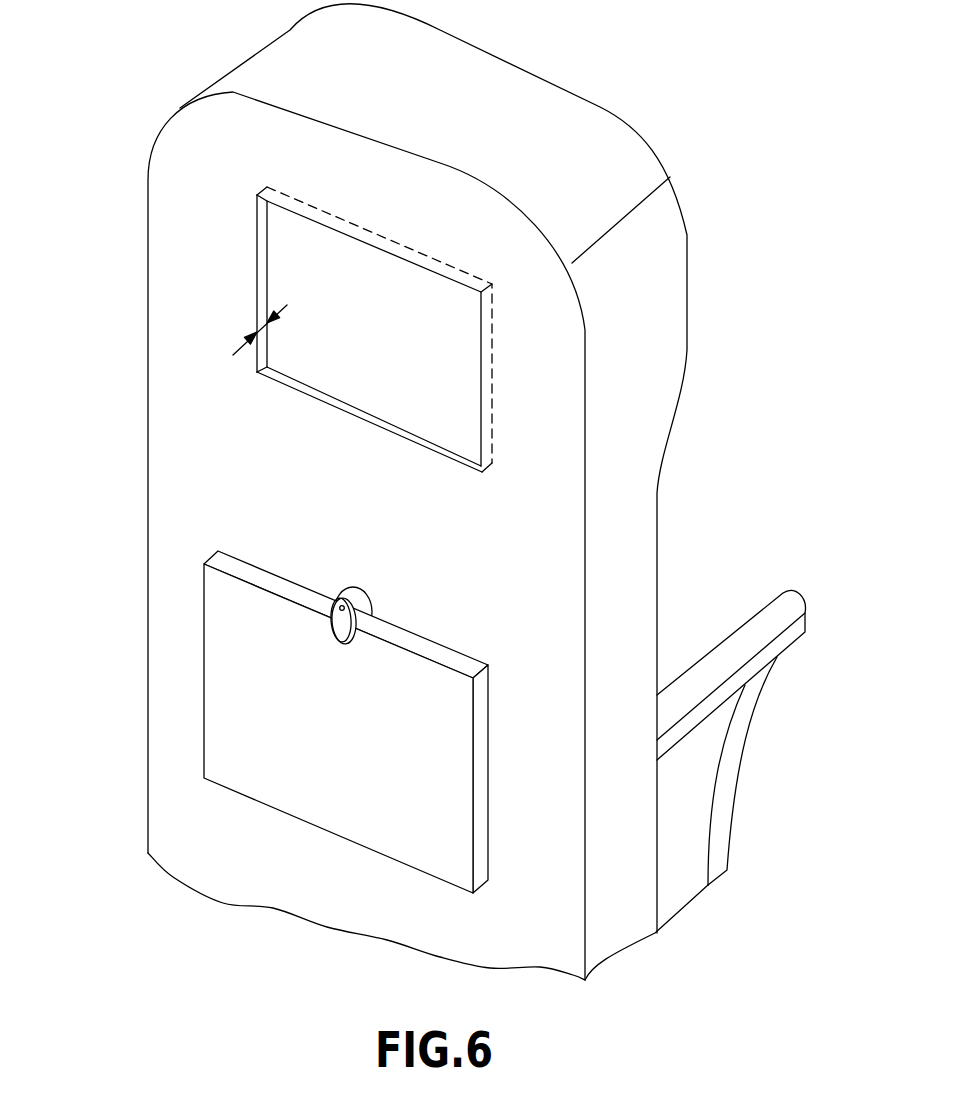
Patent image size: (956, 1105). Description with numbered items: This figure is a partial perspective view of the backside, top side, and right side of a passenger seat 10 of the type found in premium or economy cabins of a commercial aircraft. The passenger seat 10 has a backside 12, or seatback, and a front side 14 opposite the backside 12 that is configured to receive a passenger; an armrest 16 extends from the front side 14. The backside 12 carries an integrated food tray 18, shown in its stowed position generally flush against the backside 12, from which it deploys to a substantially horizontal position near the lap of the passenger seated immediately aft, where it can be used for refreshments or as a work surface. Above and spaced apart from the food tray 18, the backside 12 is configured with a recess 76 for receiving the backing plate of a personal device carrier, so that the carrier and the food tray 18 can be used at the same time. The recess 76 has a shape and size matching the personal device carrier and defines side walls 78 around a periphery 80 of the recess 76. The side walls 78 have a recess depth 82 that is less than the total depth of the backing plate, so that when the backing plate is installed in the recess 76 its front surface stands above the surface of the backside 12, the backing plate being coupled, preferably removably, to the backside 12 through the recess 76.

The passenger seat 10 is at (432, 492).
The backside 12 is at (205, 128).
The front side 14 is at (687, 238).
The armrest 16 is at (768, 620).
The food tray 18 is at (237, 705).
The recess 76 is at (341, 323).
The side walls 78 is at (262, 257).
The periphery 80 is at (353, 410).
The recess depth 82 is at (262, 328).